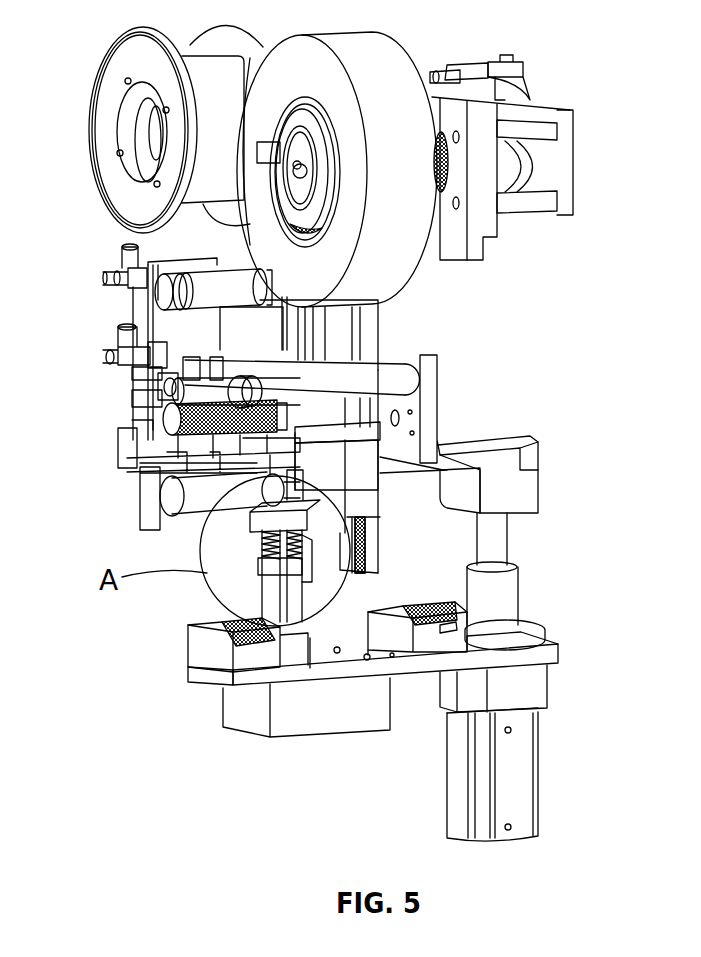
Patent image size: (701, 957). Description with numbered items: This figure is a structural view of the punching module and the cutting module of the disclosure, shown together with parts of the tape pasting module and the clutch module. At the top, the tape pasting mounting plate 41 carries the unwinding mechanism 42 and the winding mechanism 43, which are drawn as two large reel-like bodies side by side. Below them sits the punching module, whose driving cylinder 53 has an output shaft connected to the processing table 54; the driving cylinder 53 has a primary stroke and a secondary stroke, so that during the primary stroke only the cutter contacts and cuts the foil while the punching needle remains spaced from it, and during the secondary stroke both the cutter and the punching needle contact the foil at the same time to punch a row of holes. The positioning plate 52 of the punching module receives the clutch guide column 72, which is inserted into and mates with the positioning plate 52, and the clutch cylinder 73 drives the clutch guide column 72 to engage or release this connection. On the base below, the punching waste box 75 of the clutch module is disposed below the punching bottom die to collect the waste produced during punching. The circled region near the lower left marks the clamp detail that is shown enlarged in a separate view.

The tape pasting mounting plate 41 is at (427, 298).
The unwinding mechanism 42 is at (363, 68).
The winding mechanism 43 is at (145, 82).
The positioning plate 52 is at (513, 490).
The driving cylinder 53 is at (340, 355).
The processing table 54 is at (317, 463).
The clutch guide column 72 is at (493, 600).
The clutch cylinder 73 is at (520, 707).
The punching waste box 75 is at (317, 723).